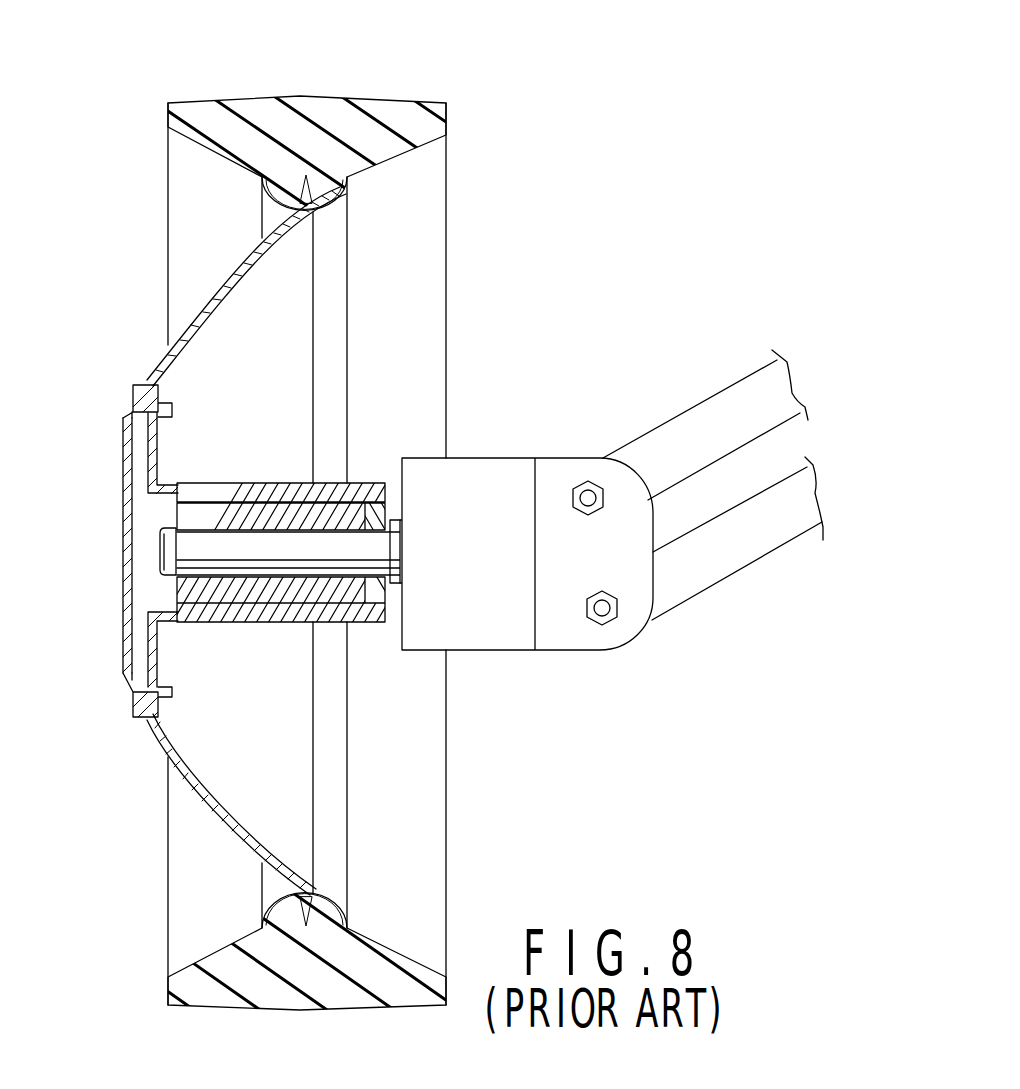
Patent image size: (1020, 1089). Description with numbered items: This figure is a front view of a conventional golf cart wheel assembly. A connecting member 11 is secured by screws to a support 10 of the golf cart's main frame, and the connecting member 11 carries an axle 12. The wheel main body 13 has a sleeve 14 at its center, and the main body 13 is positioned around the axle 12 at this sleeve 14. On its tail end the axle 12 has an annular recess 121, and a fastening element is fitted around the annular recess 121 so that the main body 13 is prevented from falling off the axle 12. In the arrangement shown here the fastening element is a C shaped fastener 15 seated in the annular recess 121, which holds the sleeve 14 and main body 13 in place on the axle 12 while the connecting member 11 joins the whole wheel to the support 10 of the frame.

The support 10 is at (733, 550).
The connecting member 11 is at (505, 650).
The axle 12 is at (253, 550).
The annular recess 121 is at (158, 557).
The wheel main body 13 is at (267, 108).
The sleeve 14 is at (262, 527).
The C shaped fastener 15 is at (172, 522).